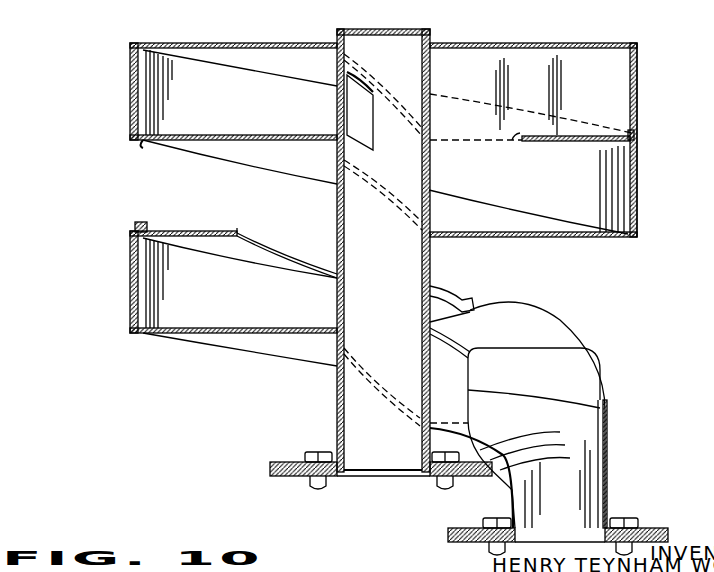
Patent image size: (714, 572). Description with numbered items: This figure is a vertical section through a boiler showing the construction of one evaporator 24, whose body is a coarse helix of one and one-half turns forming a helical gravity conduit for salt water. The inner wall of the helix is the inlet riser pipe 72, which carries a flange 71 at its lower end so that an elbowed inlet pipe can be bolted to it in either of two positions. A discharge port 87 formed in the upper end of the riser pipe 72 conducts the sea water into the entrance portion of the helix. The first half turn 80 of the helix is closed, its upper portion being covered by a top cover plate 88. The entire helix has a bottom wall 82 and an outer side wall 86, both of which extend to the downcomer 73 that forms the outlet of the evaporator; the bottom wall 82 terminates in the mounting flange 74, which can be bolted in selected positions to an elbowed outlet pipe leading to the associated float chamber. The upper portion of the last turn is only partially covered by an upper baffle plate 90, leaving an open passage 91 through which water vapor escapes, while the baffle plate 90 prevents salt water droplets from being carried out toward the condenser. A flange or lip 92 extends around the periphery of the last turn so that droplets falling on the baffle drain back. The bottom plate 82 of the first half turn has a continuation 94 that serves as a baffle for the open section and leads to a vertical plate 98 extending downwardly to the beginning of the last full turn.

The evaporator 24 is at (130, 94).
The flange 71 is at (282, 465).
The inlet riser pipe 72 is at (337, 199).
The downcomer 73 is at (600, 420).
The flange 74 is at (660, 530).
The first half turn 80 is at (140, 70).
The bottom wall 82 is at (143, 141).
The outer side wall 86 is at (140, 112).
The discharge port 87 is at (376, 135).
The top cover plate 88 is at (280, 46).
The upper baffle plate 90 is at (558, 142).
The open passage 91 is at (514, 142).
The flange or lip 92 is at (640, 136).
The continuation of bottom plate 94 is at (540, 46).
The vertical plate 98 is at (531, 95).